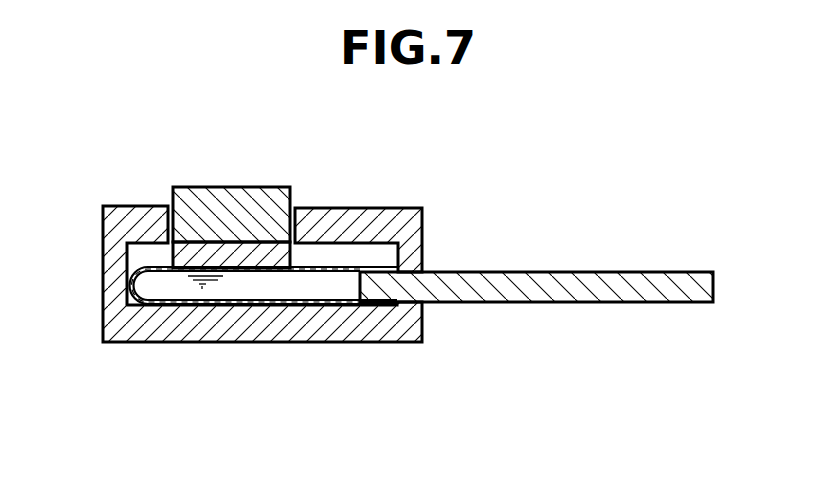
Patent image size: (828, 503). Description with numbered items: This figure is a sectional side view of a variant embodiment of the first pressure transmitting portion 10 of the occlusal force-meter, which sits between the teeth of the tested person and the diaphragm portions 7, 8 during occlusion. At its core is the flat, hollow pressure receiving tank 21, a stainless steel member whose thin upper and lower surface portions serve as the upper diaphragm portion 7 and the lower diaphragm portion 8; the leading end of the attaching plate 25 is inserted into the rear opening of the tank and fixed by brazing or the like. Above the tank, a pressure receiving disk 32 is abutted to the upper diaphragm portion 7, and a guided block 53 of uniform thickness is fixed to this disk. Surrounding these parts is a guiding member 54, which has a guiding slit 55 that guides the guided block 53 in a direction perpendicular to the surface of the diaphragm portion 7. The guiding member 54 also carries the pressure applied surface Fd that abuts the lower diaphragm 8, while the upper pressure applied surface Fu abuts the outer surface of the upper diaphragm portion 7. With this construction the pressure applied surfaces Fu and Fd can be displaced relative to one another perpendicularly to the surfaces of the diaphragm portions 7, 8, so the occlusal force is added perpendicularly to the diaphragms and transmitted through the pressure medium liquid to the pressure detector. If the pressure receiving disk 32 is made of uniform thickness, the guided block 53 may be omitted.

The first pressure transmitting portion 10 is at (430, 203).
The diaphragm portion 7 is at (337, 208).
The diaphragm portion 8 is at (295, 305).
The pressure receiving tank 21 is at (330, 305).
The attaching plate 25 is at (538, 272).
The pressure receiving disk 32 is at (127, 253).
The guided block 53 is at (208, 187).
The guiding slit 55 is at (266, 215).
The guiding member 54 is at (100, 342).
The pressure applied surface Fd is at (192, 302).
The pressure applied surface Fu is at (253, 267).